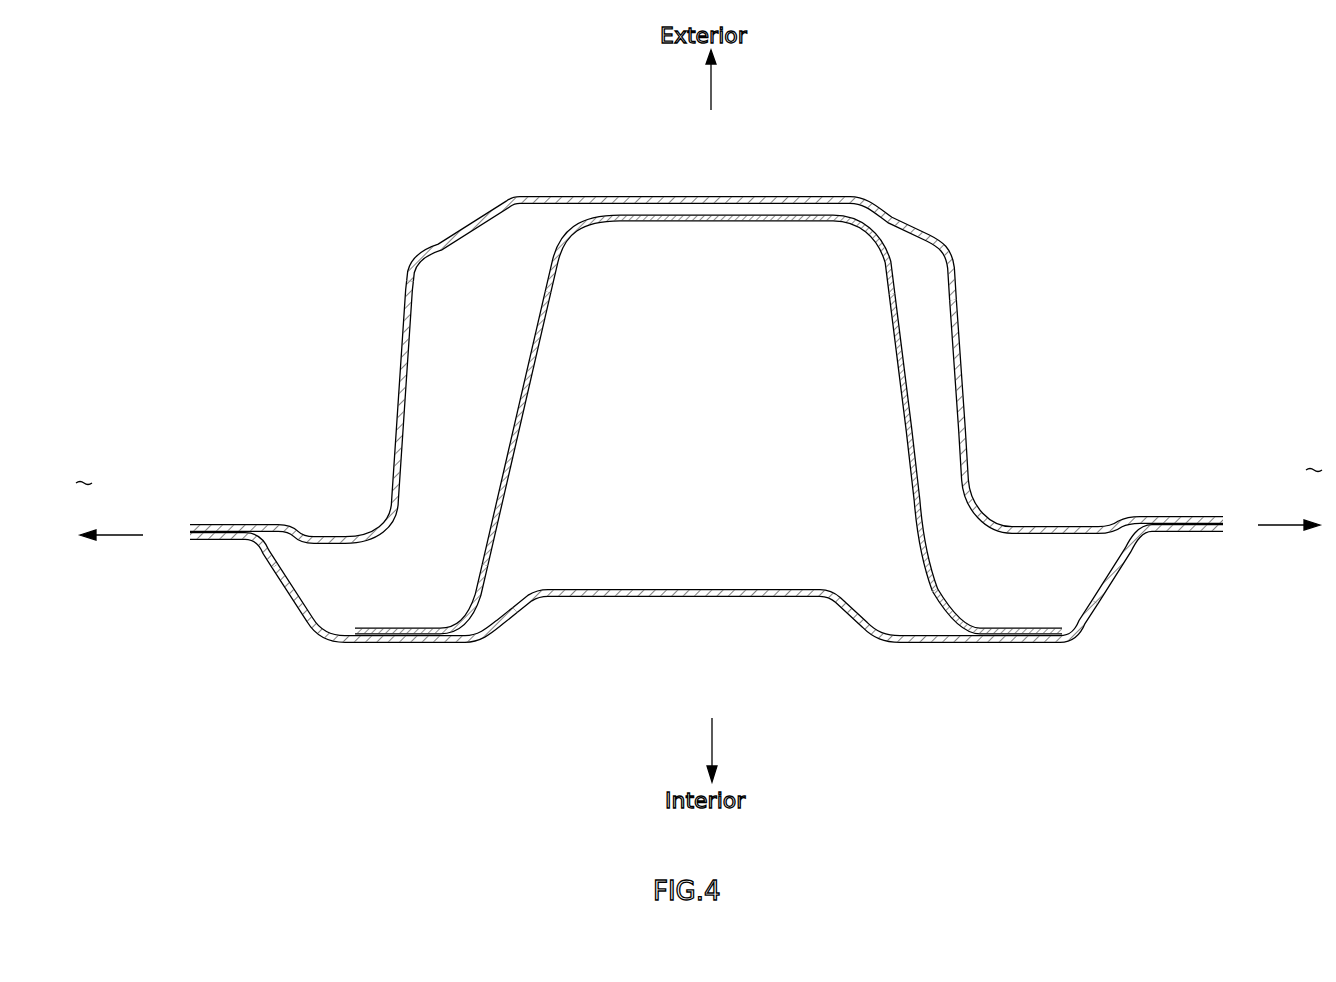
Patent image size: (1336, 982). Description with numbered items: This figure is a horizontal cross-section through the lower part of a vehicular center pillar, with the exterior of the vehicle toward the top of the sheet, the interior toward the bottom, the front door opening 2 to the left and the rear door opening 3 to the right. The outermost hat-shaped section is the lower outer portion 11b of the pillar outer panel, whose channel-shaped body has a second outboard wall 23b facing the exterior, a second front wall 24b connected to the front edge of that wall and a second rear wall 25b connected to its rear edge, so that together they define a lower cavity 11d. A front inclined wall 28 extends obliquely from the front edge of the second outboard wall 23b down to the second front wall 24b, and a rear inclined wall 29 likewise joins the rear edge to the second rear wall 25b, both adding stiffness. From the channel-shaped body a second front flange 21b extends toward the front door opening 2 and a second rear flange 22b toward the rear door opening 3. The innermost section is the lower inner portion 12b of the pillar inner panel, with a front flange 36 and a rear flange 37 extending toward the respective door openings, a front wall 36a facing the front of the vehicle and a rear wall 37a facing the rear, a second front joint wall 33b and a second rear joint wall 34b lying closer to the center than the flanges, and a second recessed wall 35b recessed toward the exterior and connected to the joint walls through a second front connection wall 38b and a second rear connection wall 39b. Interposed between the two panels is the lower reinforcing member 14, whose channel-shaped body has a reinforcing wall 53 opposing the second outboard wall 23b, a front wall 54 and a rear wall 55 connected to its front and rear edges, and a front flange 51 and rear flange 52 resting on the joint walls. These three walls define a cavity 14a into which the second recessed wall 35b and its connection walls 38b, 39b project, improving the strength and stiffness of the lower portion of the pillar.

The front door opening 2 is at (109, 513).
The rear door opening 3 is at (1290, 500).
The lower outer portion 11b is at (715, 315).
The lower cavity 11d is at (538, 237).
The lower inner portion 12b is at (706, 618).
The lower reinforcing member 14 is at (708, 383).
The cavity 14a is at (739, 424).
The second front flange 21b is at (240, 525).
The second rear flange 22b is at (1210, 517).
The second outboard wall 23b is at (758, 198).
The second front wall 24b is at (400, 360).
The second rear wall 25b is at (962, 350).
The front inclined wall 28 is at (478, 212).
The rear inclined wall 29 is at (898, 213).
The second front joint wall 33b is at (375, 644).
The second rear joint wall 34b is at (1038, 644).
The second recessed wall 35b is at (642, 598).
The front flange 36 is at (207, 541).
The front wall 36a is at (290, 603).
The rear flange 37 is at (1193, 534).
The rear wall 37a is at (1120, 591).
The second front connection wall 38b is at (507, 620).
The second rear connection wall 39b is at (854, 620).
The front flange 51 is at (404, 628).
The rear flange 52 is at (1012, 628).
The reinforcing wall 53 is at (652, 215).
The front wall 54 is at (523, 388).
The rear wall 55 is at (905, 405).